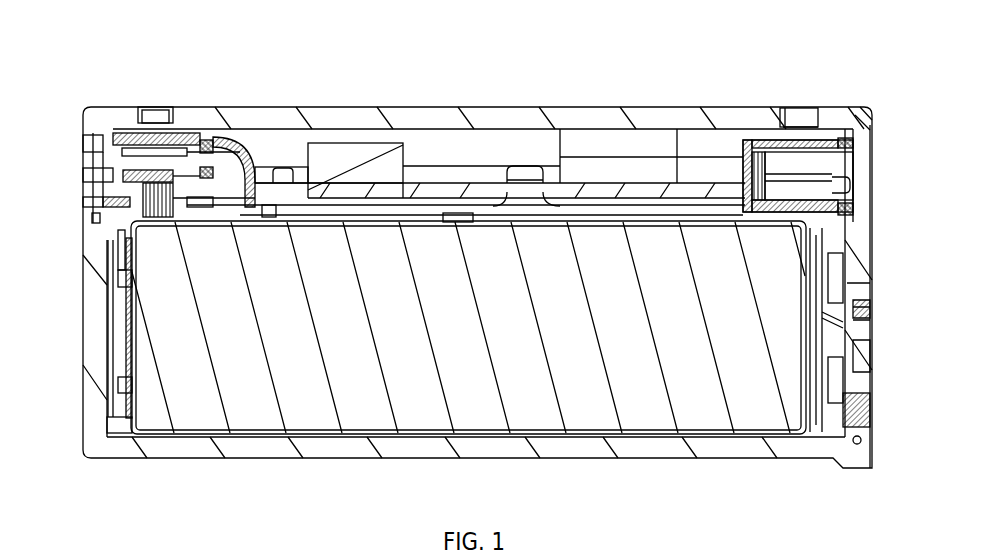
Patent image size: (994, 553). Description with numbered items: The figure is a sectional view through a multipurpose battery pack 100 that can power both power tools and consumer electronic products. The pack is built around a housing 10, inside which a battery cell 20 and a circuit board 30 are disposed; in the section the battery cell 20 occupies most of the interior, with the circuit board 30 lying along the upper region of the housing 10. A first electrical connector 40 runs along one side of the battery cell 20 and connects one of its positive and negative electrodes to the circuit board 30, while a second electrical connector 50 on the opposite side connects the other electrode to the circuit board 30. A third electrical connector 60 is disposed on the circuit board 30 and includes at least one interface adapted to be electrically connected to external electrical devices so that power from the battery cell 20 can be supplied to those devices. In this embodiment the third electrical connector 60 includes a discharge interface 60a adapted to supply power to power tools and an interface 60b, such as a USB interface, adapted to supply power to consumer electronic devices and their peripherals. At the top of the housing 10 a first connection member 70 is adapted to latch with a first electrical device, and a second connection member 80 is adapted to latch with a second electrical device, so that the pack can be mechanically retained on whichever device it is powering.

The multipurpose battery pack 100 is at (248, 28).
The housing 10 is at (386, 450).
The battery cell 20 is at (476, 407).
The circuit board 30 is at (478, 183).
The first electrical connector 40 is at (127, 312).
The second electrical connector 50 is at (812, 319).
The third electrical connector 60 is at (66, 190).
The discharge interface 60a is at (140, 158).
The interface 60b is at (805, 174).
The first connection member 70 is at (154, 108).
The second connection member 80 is at (802, 109).